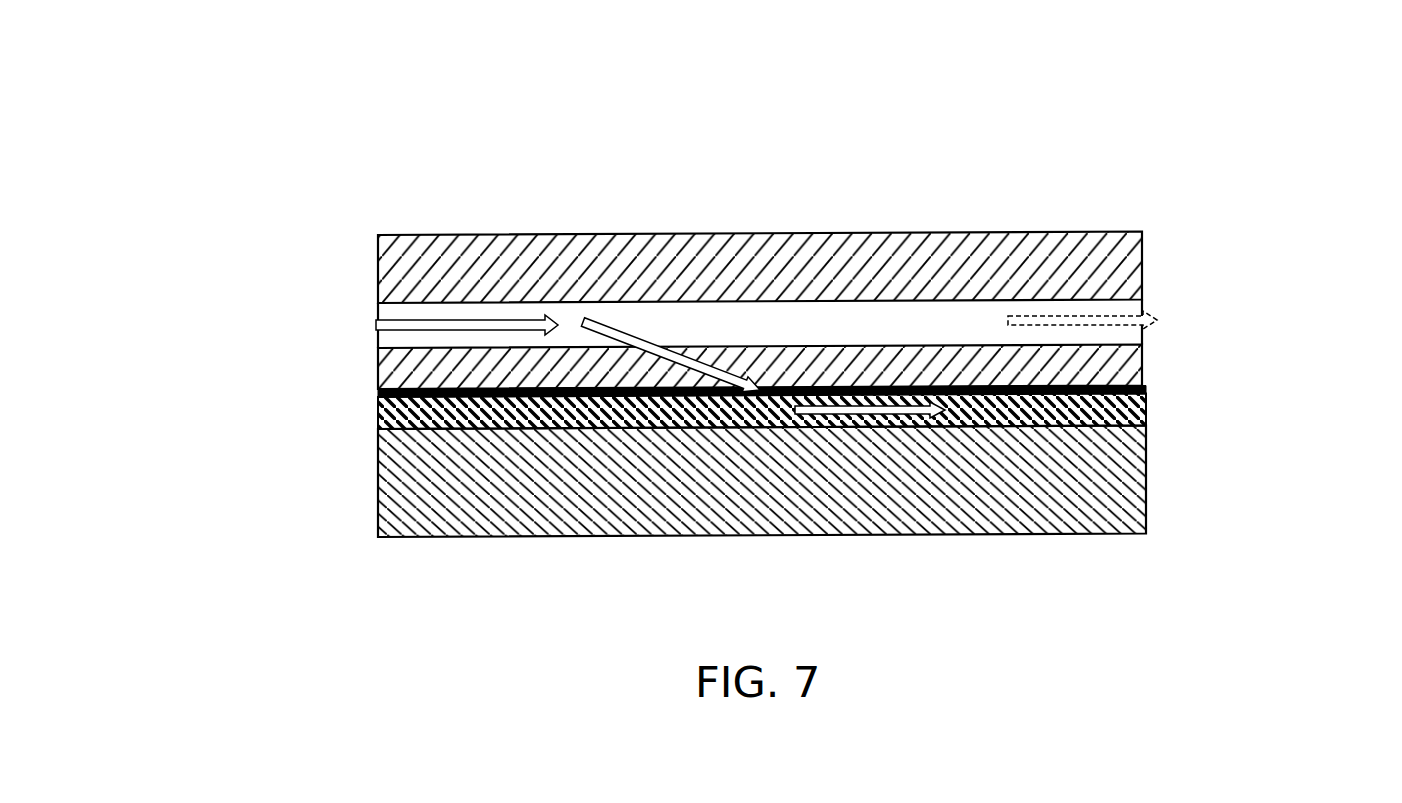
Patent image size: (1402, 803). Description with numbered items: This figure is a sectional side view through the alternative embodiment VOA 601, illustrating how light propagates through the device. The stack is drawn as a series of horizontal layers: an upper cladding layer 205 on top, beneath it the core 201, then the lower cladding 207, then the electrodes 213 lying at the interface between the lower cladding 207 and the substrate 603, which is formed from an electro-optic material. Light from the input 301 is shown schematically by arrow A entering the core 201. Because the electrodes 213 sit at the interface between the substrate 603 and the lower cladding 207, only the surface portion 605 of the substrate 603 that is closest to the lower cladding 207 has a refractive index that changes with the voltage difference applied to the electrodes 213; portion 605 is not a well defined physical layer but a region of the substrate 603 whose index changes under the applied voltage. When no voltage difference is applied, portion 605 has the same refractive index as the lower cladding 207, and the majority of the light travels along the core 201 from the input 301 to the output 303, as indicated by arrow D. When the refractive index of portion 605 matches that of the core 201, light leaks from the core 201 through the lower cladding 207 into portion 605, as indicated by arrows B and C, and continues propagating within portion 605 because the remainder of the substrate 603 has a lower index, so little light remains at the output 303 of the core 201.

The VOA 601 is at (588, 96).
The upper cladding layer 205 is at (447, 234).
The core 201 is at (378, 312).
The lower cladding 207 is at (378, 371).
The electrodes 213 is at (378, 392).
The portion 605 is at (762, 412).
The substrate 603 is at (378, 463).
The input 301 is at (342, 327).
The output 303 is at (1180, 320).
The arrow A is at (443, 318).
The arrow B is at (640, 338).
The arrow C is at (837, 388).
The arrow D is at (1062, 310).